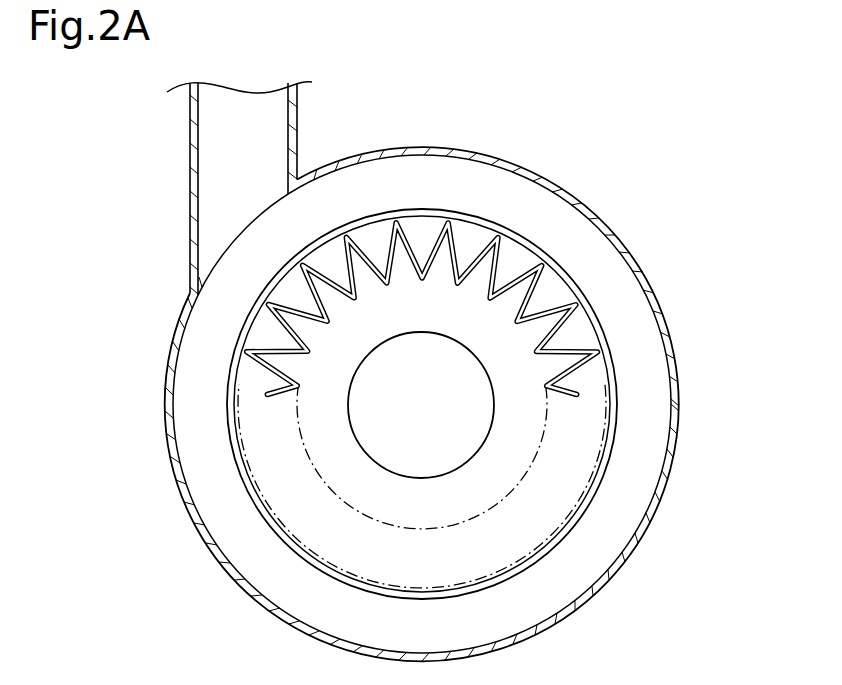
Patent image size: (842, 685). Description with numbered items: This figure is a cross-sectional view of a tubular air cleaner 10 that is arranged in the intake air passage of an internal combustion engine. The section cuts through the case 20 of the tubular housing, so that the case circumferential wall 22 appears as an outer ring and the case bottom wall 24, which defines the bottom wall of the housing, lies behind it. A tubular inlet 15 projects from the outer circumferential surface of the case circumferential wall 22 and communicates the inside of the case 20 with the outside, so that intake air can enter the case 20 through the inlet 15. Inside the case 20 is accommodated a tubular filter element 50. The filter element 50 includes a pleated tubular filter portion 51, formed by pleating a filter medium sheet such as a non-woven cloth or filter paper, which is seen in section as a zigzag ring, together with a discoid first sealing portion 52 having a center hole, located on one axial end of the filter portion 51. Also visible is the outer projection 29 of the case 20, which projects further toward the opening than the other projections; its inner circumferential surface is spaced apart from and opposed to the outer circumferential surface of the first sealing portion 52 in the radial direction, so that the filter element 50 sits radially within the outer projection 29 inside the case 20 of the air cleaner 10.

The air cleaner 10 is at (706, 117).
The case 20 is at (533, 170).
The case circumferential wall 22 is at (408, 147).
The case bottom wall 24 is at (265, 580).
The outer projection 29 is at (228, 422).
The inlet 15 is at (190, 178).
The filter element 50 is at (578, 332).
The filter portion 51 is at (522, 262).
The first sealing portion 52 is at (418, 310).